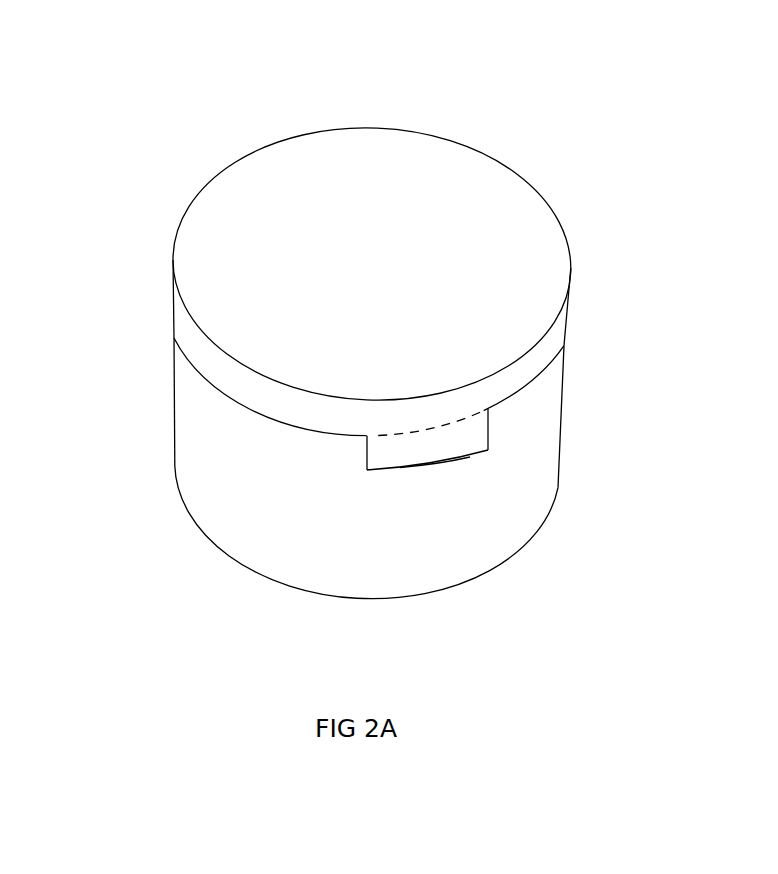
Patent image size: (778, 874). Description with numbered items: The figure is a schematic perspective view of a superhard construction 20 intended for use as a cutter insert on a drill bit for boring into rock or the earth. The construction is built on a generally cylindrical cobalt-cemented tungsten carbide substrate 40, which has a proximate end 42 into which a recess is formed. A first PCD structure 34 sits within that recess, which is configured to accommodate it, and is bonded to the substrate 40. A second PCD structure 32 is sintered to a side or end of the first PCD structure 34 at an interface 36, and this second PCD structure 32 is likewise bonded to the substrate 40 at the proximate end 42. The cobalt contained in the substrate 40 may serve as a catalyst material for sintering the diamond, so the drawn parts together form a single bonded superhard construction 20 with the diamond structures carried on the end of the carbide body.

The superhard construction 20 is at (177, 127).
The second PCD structure 32 is at (571, 305).
The first PCD structure 34 is at (436, 447).
The interface 36 is at (484, 418).
The substrate 40 is at (216, 450).
The proximate end 42 is at (562, 353).